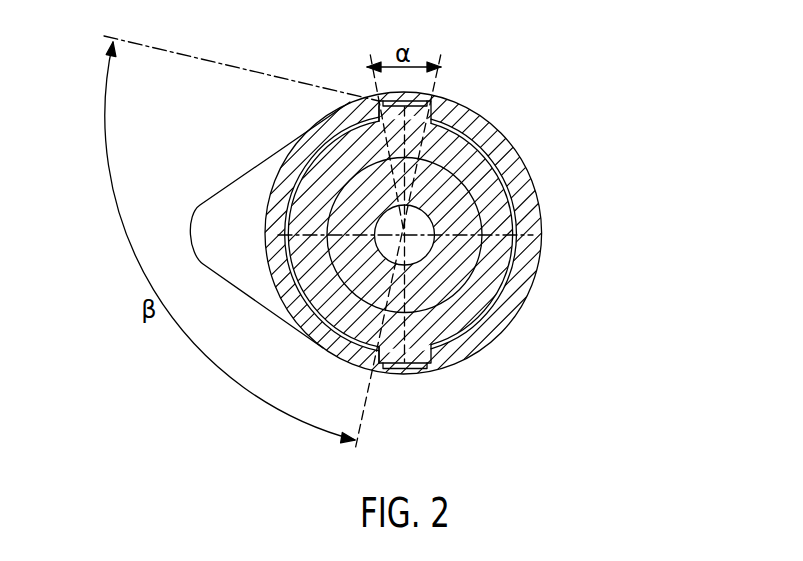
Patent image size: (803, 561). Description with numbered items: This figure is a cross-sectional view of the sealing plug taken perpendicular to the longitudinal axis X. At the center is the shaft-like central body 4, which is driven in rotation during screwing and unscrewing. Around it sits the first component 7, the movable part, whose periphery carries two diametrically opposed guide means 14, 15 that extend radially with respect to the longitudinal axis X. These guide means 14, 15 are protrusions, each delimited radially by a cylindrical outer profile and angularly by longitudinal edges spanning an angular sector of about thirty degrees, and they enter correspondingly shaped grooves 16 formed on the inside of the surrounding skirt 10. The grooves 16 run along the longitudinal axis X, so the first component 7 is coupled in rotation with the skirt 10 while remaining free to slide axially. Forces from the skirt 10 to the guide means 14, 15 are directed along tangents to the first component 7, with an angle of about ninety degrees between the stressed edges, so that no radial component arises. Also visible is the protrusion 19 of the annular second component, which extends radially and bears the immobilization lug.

The central body 4 is at (468, 260).
The first component 7 is at (493, 202).
The skirt 10 is at (498, 148).
The guide means 14 is at (442, 103).
The guide means 15 is at (440, 357).
The grooves 16 is at (378, 109).
The protrusion 19 is at (242, 193).
The longitudinal axis X is at (407, 238).